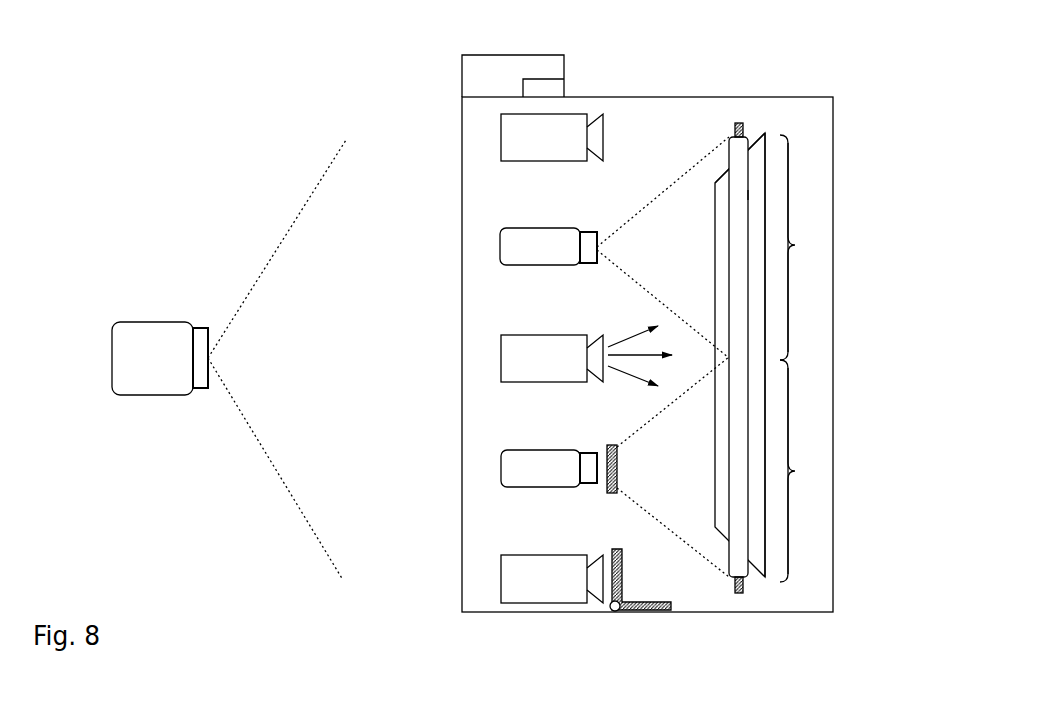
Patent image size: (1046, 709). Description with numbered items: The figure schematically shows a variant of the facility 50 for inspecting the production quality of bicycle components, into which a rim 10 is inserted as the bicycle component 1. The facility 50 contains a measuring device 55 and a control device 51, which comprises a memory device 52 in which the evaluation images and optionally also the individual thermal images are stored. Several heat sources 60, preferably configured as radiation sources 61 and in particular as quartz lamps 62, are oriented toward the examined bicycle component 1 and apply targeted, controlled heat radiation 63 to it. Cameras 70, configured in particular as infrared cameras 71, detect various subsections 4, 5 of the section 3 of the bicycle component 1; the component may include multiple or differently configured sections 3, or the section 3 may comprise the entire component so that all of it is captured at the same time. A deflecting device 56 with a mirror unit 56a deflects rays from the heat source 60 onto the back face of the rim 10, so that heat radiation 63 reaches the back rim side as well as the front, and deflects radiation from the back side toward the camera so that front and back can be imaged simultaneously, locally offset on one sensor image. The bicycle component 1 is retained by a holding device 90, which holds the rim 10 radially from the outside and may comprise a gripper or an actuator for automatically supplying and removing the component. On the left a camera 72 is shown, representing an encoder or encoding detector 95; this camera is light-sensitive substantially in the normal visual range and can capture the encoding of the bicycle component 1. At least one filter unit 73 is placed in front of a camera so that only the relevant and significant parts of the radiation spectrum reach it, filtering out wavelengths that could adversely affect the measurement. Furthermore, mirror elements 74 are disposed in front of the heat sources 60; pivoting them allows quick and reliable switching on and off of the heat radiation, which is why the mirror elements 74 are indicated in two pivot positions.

The bicycle component 1 is at (780, 128).
The section 3 is at (798, 358).
The subsection 4 is at (818, 458).
The subsection 5 is at (815, 228).
The rim 10 is at (747, 195).
The facility 50 is at (390, 88).
The control device 51 is at (470, 60).
The memory device 52 is at (543, 84).
The measuring device 55 is at (451, 52).
The deflecting device 56 is at (774, 319).
The mirror unit 56a is at (724, 173).
The heat source 60 is at (486, 378).
The radiation source 61 is at (551, 147).
The quartz lamp 62 is at (618, 130).
The heat radiation 63 is at (628, 372).
The camera 70 is at (574, 329).
The infrared camera 71 is at (567, 258).
The camera 72 is at (142, 342).
The filter unit 73 is at (617, 469).
The mirror element 74 is at (622, 572).
The holding device 90 is at (738, 121).
The encoding detector 95 is at (139, 422).